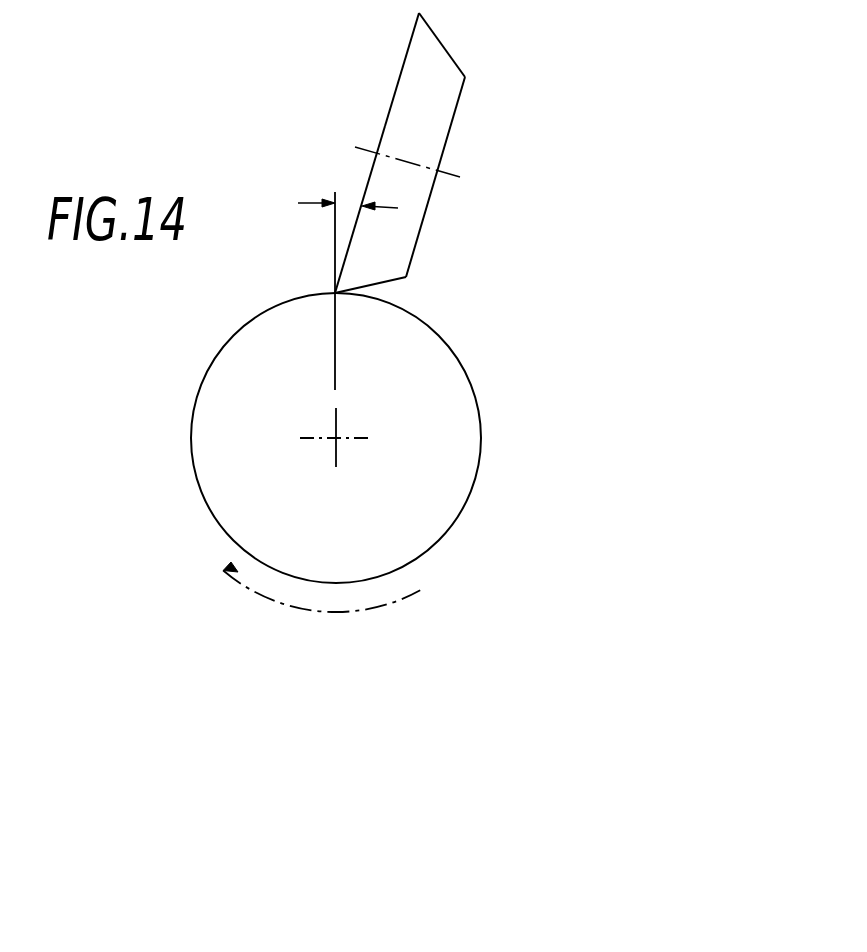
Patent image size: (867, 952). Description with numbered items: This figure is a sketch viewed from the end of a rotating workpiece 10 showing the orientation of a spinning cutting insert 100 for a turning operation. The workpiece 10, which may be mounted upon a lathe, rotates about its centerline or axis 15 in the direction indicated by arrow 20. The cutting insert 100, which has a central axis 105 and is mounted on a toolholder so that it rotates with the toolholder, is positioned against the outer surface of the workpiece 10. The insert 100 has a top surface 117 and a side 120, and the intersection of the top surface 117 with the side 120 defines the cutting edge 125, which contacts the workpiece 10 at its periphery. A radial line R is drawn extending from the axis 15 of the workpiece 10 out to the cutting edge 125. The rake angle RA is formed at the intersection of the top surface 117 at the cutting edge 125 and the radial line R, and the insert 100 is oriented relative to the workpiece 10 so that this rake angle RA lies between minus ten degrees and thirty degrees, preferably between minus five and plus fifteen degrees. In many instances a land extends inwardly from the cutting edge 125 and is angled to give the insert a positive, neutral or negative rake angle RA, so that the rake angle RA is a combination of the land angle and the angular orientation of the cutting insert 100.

The workpiece 10 is at (450, 361).
The centerline 15 is at (336, 441).
The arrow 20 is at (331, 612).
The cutting insert 100 is at (426, 150).
The central axis 105 is at (447, 177).
The top surface 117 is at (406, 60).
The side 120 is at (447, 50).
The cutting edge 125 is at (390, 100).
The rake angle RA is at (350, 200).
The radial line R is at (335, 348).